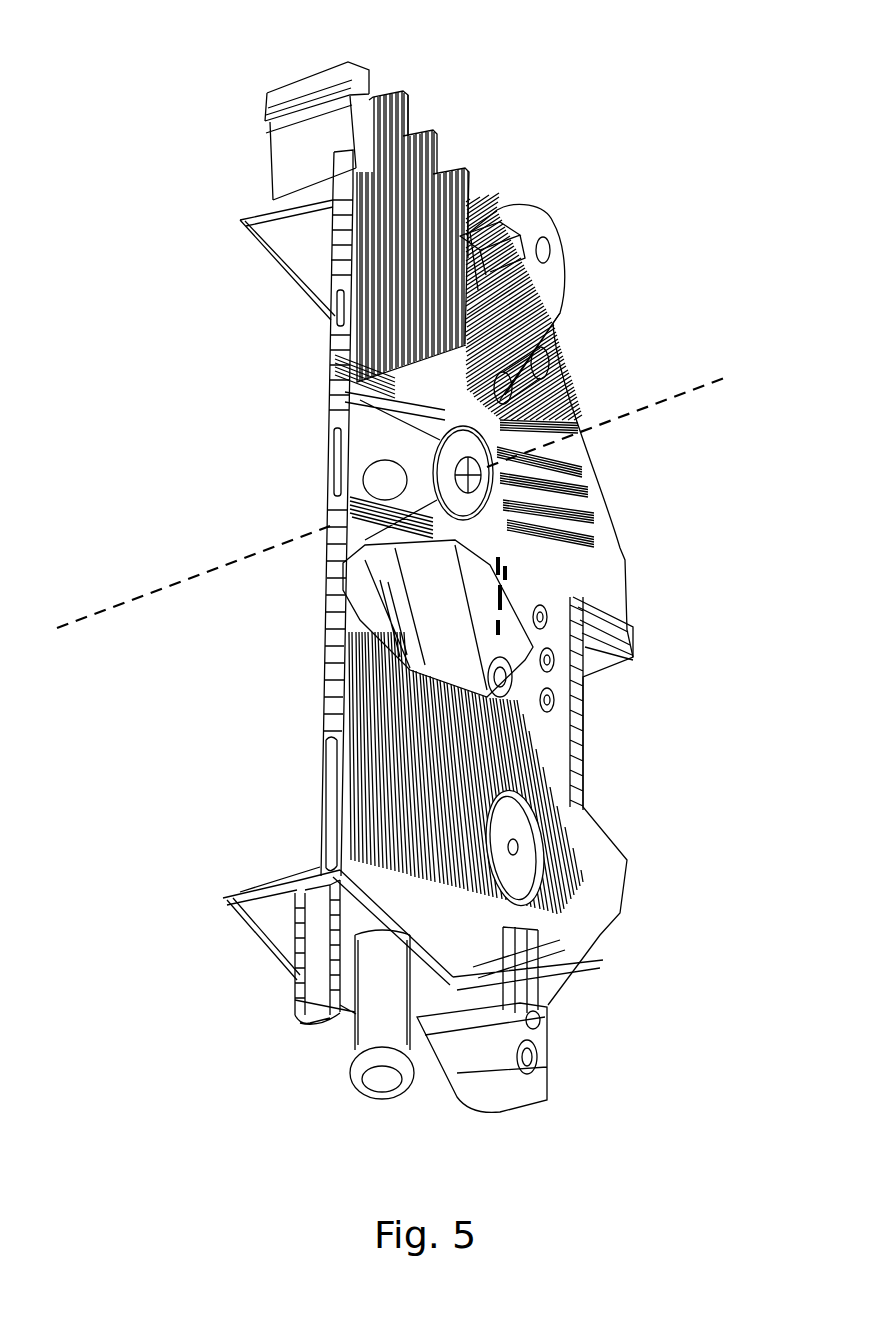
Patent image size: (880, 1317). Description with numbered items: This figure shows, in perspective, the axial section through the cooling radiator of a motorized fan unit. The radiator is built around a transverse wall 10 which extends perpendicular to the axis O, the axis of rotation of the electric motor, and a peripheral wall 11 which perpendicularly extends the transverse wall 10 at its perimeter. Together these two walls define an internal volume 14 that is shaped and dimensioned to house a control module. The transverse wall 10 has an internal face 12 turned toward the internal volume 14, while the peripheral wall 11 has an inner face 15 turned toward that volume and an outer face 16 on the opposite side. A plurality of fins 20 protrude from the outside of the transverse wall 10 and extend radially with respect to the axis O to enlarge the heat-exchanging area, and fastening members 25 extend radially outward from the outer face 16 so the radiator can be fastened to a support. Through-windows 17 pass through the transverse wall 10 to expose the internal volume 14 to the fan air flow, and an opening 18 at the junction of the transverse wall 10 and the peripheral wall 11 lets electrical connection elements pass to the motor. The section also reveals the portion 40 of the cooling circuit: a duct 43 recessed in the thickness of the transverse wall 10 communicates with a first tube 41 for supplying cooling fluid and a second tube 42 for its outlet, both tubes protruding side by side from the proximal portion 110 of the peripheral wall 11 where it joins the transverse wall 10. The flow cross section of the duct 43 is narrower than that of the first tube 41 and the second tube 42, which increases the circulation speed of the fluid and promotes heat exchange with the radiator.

The transverse wall 10 is at (592, 582).
The peripheral wall 11 is at (276, 927).
The internal face 12 is at (582, 553).
The internal volume 14 is at (259, 528).
The inner face 15 is at (303, 243).
The outer face 16 is at (257, 912).
The through-window 17 is at (525, 653).
The opening 18 is at (582, 733).
The fin 20 is at (313, 77).
The fastening member 25 is at (537, 215).
The portion of a cooling circuit 40 is at (144, 794).
The first tube 41 is at (293, 1005).
The second tube 42 is at (350, 1072).
The duct 43 is at (340, 312).
The proximal portion 110 is at (449, 981).
The axis O is at (717, 378).